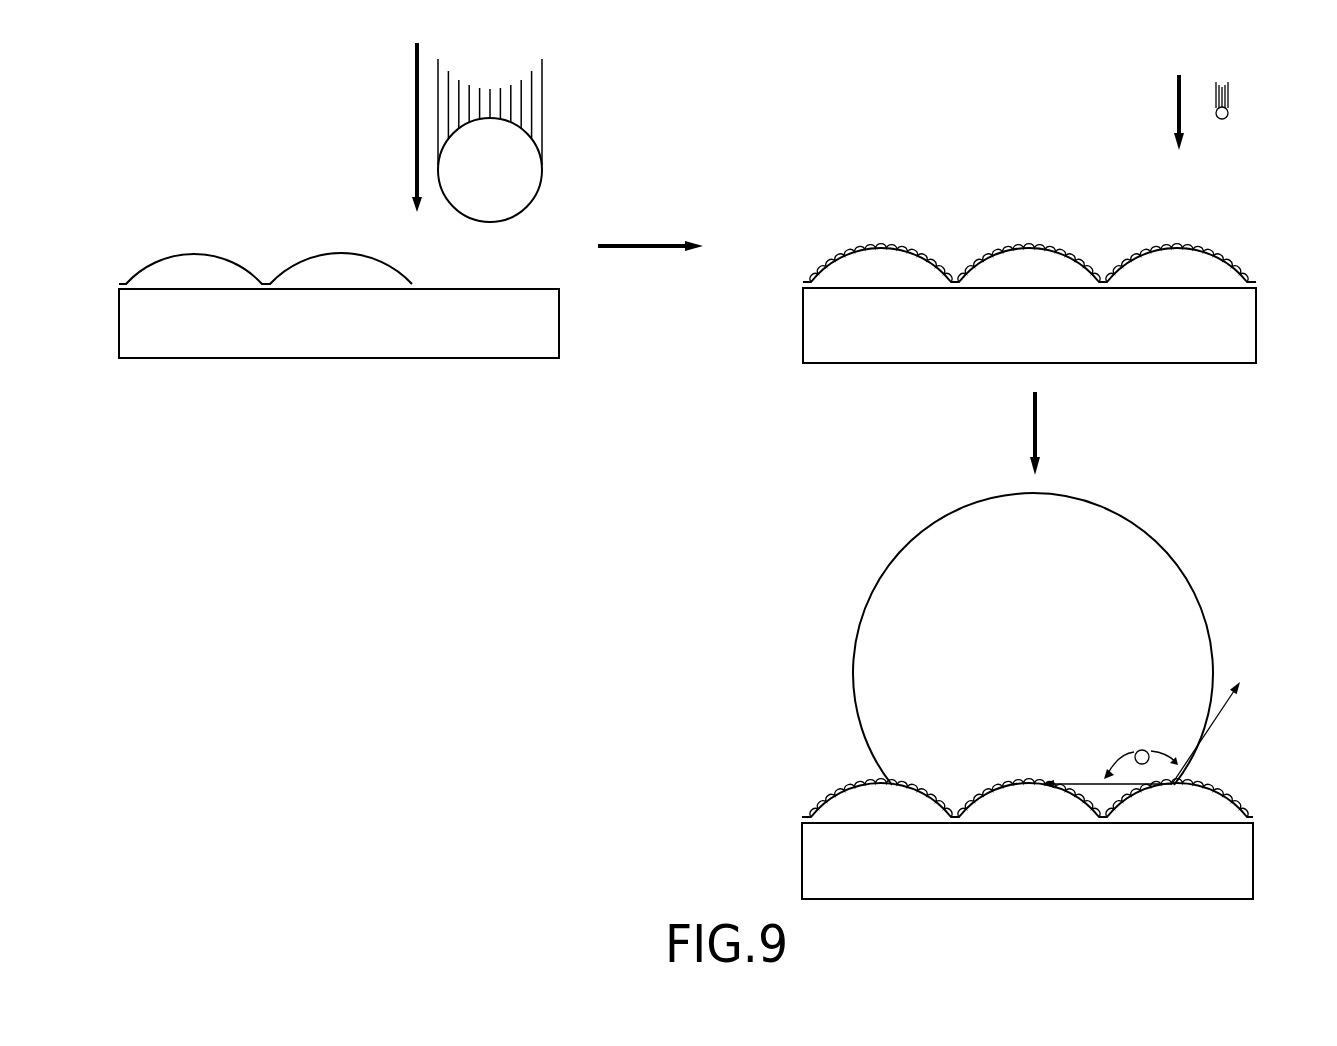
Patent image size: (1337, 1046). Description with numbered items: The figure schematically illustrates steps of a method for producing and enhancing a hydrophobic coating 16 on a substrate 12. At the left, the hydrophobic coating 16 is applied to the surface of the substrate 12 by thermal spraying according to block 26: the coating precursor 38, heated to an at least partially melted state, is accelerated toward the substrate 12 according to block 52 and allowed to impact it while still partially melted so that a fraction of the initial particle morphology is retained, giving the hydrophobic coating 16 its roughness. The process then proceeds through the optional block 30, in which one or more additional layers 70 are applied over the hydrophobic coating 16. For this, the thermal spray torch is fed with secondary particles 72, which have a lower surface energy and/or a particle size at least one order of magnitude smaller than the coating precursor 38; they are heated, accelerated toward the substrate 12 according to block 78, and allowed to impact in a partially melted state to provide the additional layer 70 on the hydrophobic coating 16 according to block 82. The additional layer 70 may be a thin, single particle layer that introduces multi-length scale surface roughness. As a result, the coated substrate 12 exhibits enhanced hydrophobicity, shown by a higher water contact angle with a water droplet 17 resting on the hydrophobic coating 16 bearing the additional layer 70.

The substrate 12 is at (545, 327).
The hydrophobic coating 16 is at (1208, 276).
The water droplet 17 is at (1180, 615).
The block 26 is at (417, 122).
The optional block 30 is at (642, 246).
The coating precursor 38 is at (525, 163).
The block 52 is at (417, 158).
The additional layer 70 is at (868, 248).
The secondary particles 72 is at (1228, 110).
The block 78 is at (1178, 100).
The block 82 is at (1037, 430).